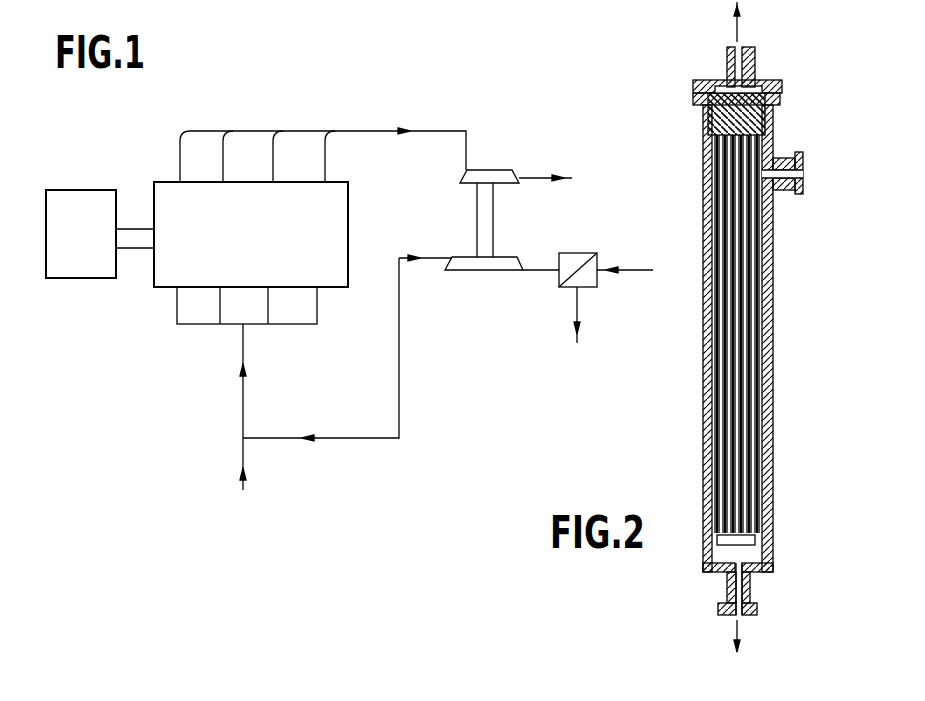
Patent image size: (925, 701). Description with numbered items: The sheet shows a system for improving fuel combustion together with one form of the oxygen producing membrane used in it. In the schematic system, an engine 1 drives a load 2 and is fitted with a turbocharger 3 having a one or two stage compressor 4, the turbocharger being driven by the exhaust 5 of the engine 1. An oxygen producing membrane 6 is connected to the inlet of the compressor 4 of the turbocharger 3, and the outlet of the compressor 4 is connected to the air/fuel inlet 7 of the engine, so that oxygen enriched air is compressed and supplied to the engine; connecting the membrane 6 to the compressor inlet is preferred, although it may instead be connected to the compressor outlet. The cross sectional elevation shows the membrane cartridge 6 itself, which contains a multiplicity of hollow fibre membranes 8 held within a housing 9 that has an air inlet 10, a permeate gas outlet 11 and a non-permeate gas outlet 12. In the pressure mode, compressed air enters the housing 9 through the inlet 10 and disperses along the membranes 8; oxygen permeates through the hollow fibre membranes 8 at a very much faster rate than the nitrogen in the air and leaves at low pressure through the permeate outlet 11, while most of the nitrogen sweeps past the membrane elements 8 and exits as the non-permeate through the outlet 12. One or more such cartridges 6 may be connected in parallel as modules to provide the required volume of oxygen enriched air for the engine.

In FIG. 1, the engine 1 is at (238, 251).
In FIG. 1, the load 2 is at (68, 253).
In FIG. 1, the turbocharger 3 is at (512, 169).
In FIG. 1, the compressor 4 is at (470, 272).
In FIG. 1, the exhaust 5 is at (383, 130).
In FIG. 1, the oxygen producing membrane 6 is at (559, 287).
In FIG. 2, the oxygen producing membrane 6 is at (780, 278).
In FIG. 1, the air/fuel inlet 7 is at (243, 400).
In FIG. 2, the hollow fibre membranes 8 is at (746, 370).
In FIG. 2, the housing 9 is at (773, 410).
In FIG. 2, the air inlet 10 is at (797, 158).
In FIG. 2, the permeate gas outlet 11 is at (724, 53).
In FIG. 2, the non-permeate gas outlet 12 is at (750, 590).